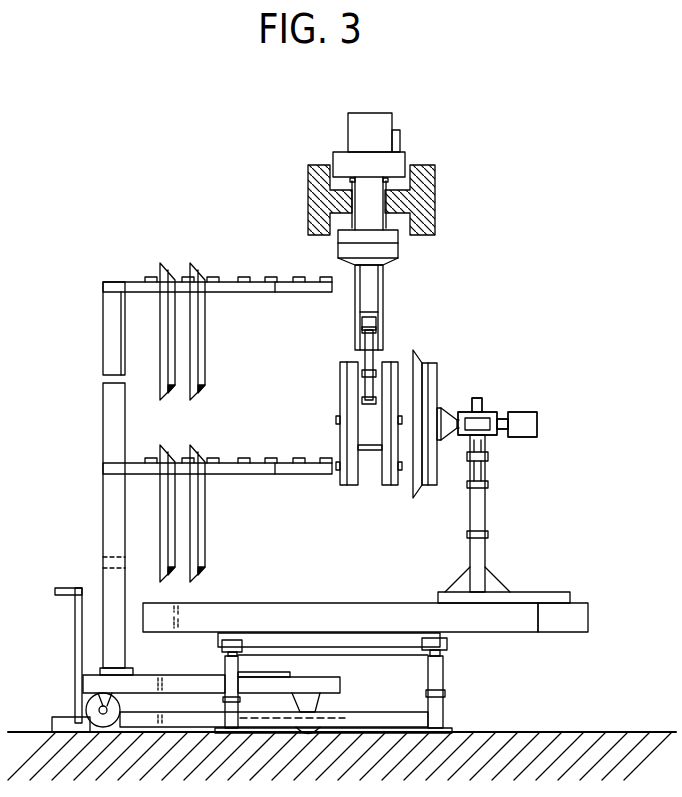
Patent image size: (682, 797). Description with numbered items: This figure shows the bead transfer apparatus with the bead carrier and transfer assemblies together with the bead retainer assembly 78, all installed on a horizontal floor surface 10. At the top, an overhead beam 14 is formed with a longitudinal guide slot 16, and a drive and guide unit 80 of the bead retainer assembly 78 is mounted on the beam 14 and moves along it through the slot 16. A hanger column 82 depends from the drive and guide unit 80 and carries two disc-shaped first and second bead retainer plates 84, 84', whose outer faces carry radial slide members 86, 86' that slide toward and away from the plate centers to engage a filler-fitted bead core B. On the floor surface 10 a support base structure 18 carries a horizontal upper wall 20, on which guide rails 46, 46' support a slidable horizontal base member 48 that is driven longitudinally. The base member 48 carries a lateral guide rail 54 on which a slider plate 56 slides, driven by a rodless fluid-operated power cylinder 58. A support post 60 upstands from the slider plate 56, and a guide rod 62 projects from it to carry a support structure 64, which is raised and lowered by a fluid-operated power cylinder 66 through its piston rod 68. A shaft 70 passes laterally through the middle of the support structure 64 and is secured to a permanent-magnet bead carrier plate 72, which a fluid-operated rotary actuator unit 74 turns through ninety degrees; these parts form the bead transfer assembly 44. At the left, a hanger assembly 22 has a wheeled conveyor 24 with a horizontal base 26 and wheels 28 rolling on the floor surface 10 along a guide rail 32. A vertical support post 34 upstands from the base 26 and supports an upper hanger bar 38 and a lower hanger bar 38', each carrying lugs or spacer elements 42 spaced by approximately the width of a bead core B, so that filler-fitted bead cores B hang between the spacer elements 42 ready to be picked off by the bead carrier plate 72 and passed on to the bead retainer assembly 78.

The horizontal floor surface 10 is at (588, 731).
The overhead beam 14 is at (437, 190).
The guide slot 16 is at (386, 216).
The support base structure 18 is at (452, 712).
The horizontal upper wall 20 is at (345, 678).
The hanger assembly 22 is at (99, 312).
The wheeled conveyor 24 is at (75, 653).
The horizontal base 26 is at (134, 678).
The wheels 28 is at (118, 711).
The guide rail 32 is at (55, 716).
The vertical support post 34 is at (103, 536).
The upper hanger bar 38 is at (217, 305).
The lower hanger bar 38' is at (217, 485).
The spacer elements 42 is at (300, 277).
The bead transfer assembly 44 is at (528, 397).
The guide rail 46 is at (213, 684).
The guide rail 46' is at (463, 683).
The horizontal base member 48 is at (295, 646).
The guide rail 54 is at (366, 603).
The slider plate 56 is at (540, 591).
The fluid-operated power cylinder 58 is at (590, 618).
The support post 60 is at (486, 553).
The guide rod 62 is at (484, 413).
The support structure 64 is at (500, 435).
The fluid-operated power cylinder 66 is at (469, 496).
The piston rod 68 is at (482, 448).
The shaft 70 is at (447, 410).
The bead carrier plate 72 is at (423, 366).
The fluid-operated rotary actuator unit 74 is at (538, 421).
The bead retainer assembly 78 is at (340, 142).
The drive and guide unit 80 is at (405, 162).
The hanger column 82 is at (384, 285).
The first bead retainer plate 84 is at (396, 443).
The second bead retainer plate 84' is at (361, 439).
The radial slide members 86 is at (388, 360).
The radial slide members 86' is at (322, 427).
The filler-fitted bead core B is at (166, 398).